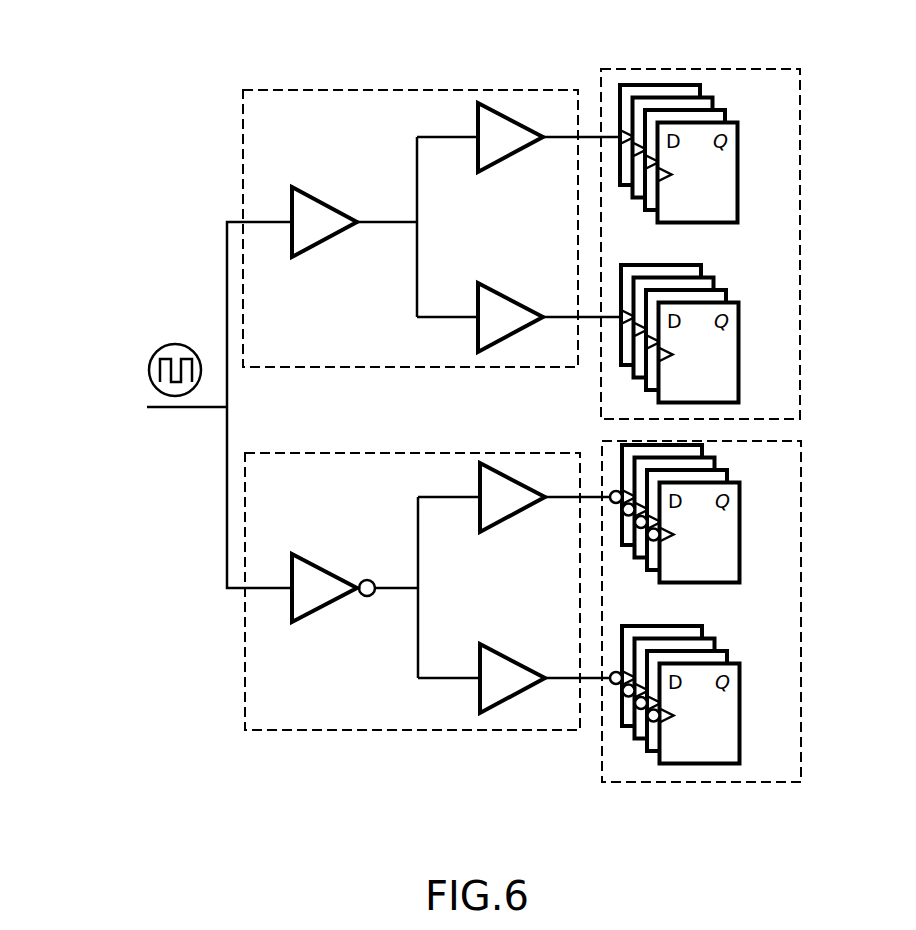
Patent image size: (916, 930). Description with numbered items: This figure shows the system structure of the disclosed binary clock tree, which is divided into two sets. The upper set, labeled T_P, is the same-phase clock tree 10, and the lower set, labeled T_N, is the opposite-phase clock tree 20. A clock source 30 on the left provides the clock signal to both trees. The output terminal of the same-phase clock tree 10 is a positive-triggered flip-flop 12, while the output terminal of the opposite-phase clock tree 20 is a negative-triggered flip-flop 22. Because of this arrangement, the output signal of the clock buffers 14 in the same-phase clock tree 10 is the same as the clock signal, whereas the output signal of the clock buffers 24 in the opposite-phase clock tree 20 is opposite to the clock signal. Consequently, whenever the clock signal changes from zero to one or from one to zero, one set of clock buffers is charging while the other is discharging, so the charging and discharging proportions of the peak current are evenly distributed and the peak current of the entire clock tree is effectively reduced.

The same-phase clock tree 10 is at (387, 196).
The positive-triggered flip-flop 12 is at (802, 190).
The clock buffers 14 is at (475, 132).
The opposite-phase clock tree 20 is at (426, 674).
The negative-triggered flip-flop 22 is at (802, 555).
The clock buffers 24 is at (507, 700).
The clock source 30 is at (148, 365).